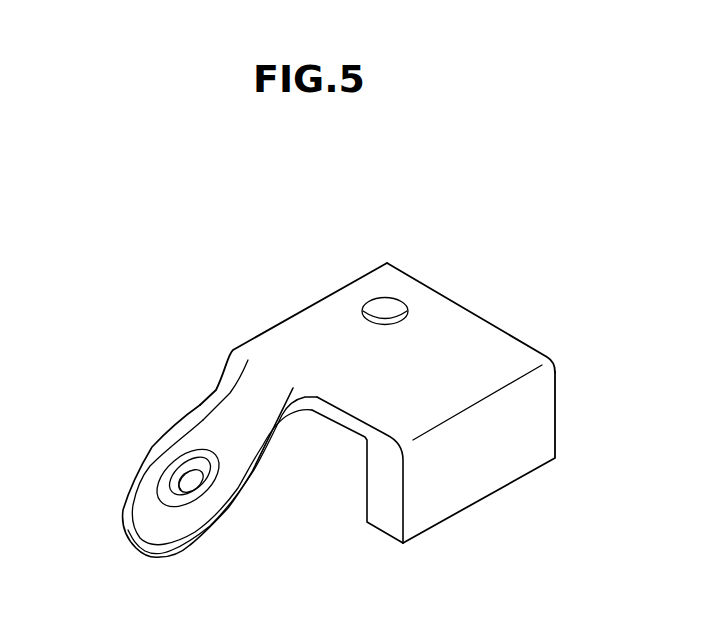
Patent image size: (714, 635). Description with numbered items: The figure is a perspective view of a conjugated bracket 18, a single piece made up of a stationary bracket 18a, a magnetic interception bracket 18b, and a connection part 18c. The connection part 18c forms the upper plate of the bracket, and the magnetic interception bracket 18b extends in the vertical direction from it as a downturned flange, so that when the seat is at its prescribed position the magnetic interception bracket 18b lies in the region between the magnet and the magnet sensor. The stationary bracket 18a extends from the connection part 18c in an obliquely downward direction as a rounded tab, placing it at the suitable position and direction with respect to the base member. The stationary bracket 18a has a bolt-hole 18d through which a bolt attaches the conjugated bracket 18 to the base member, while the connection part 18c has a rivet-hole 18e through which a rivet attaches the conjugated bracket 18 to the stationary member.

The conjugated bracket 18 is at (160, 296).
The stationary bracket 18a is at (160, 433).
The magnetic interception bracket 18b is at (472, 465).
The connection part 18c is at (462, 307).
The bolt-hole 18d is at (193, 485).
The rivet-hole 18e is at (375, 298).